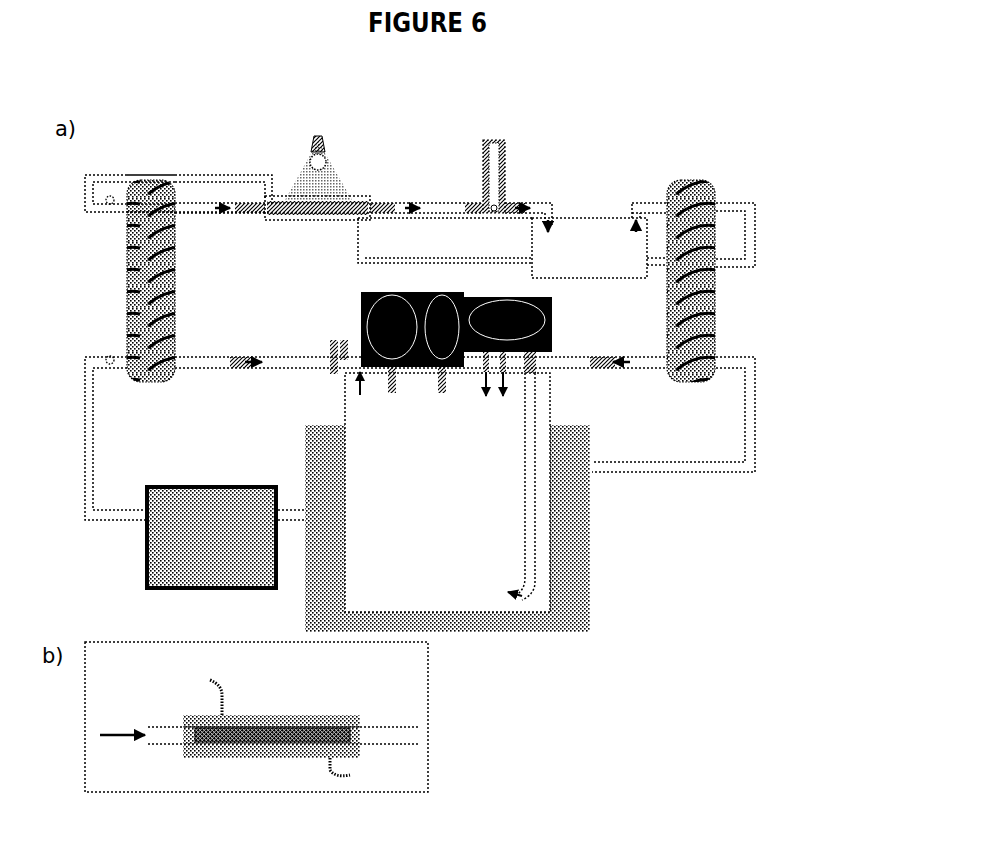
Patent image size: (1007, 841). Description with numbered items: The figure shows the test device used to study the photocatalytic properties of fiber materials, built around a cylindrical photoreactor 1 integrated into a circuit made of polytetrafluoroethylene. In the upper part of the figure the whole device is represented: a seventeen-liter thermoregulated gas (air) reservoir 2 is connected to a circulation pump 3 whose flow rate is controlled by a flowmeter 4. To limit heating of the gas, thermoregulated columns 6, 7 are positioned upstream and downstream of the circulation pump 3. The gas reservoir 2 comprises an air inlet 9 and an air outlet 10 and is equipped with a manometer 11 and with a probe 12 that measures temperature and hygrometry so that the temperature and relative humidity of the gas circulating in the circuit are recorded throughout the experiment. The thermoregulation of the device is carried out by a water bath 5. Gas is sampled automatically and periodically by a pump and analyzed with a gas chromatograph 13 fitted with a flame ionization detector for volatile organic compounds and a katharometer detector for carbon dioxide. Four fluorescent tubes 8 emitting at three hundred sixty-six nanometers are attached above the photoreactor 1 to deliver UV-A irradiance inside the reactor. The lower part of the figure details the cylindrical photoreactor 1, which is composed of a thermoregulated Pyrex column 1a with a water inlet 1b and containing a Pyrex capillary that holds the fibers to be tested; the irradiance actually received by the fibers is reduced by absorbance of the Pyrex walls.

The cylindrical photoreactor 1 is at (306, 224).
The thermoregulated pyrex column 1a is at (383, 735).
The water inlet 1b is at (277, 720).
The gas reservoir 2 is at (466, 594).
The circulation pump 3 is at (581, 230).
The flowmeter 4 is at (510, 162).
The water bath 5 is at (165, 563).
The thermoregulated column 6 is at (123, 296).
The thermoregulated column 7 is at (716, 325).
The fluorescent tubes 8 is at (332, 142).
The air inlet 9 is at (535, 549).
The air outlet 10 is at (358, 375).
The manometer 11 is at (388, 325).
The probe 12 is at (450, 302).
The gas chromatograph 13 is at (522, 320).